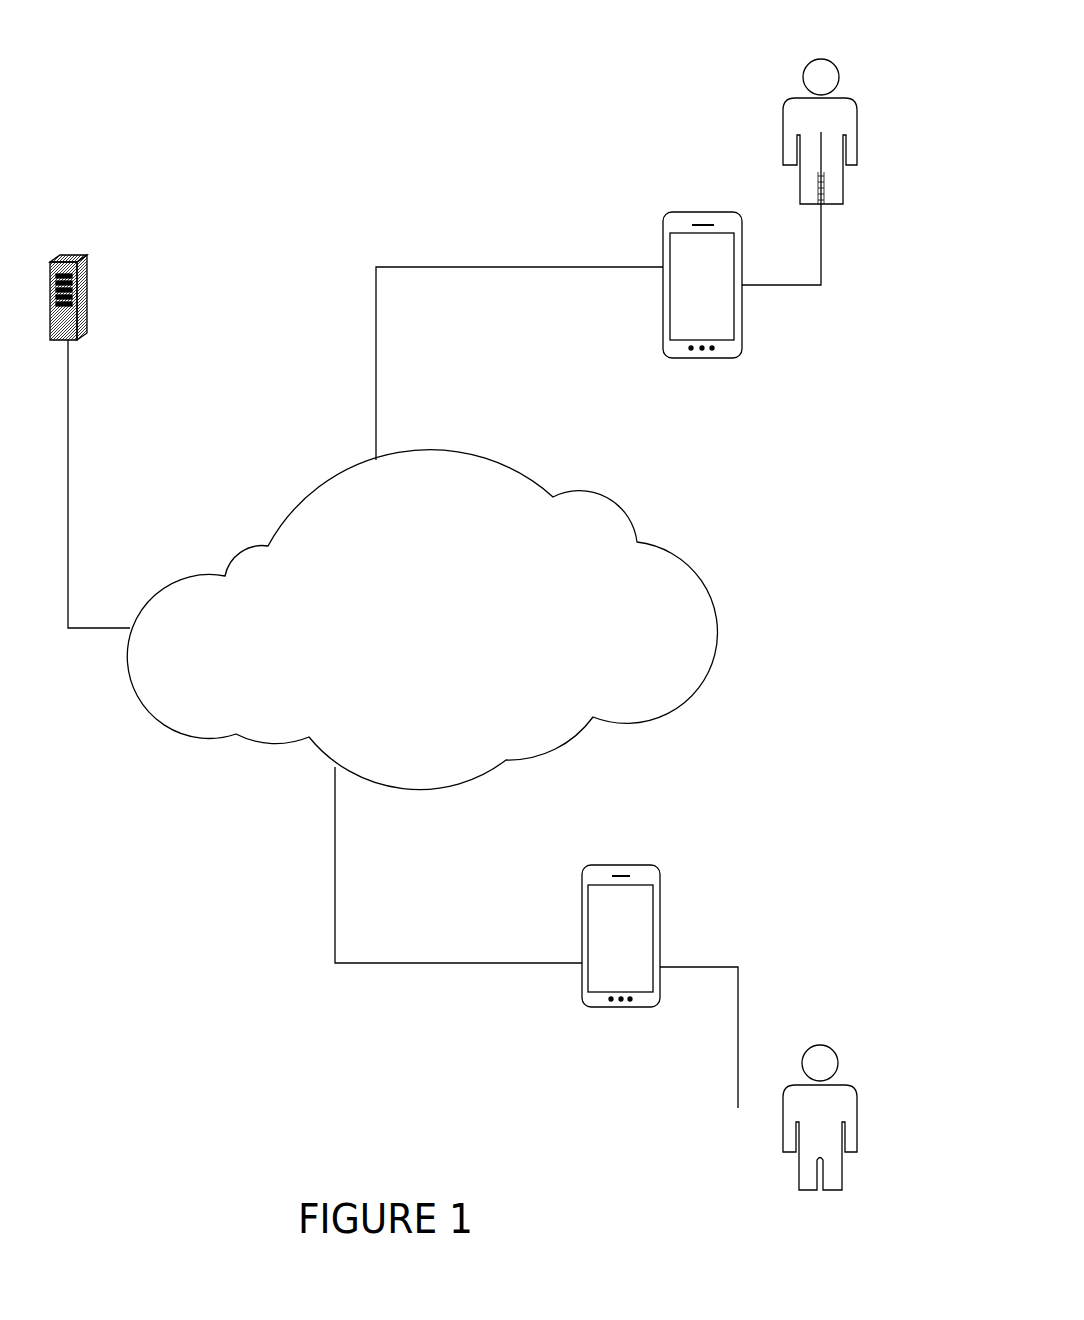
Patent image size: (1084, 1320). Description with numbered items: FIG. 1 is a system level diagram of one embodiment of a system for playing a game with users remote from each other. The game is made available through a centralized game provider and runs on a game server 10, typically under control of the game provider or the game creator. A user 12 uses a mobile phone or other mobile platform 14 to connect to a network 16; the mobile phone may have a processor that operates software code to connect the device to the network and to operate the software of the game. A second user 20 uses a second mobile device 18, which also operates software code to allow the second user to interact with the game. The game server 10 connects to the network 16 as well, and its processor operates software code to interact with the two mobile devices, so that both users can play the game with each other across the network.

The game server 10 is at (88, 296).
The user 12 is at (821, 132).
The mobile platform 14 is at (700, 212).
The network 16 is at (720, 620).
The second mobile device 18 is at (620, 935).
The second user 20 is at (738, 1032).